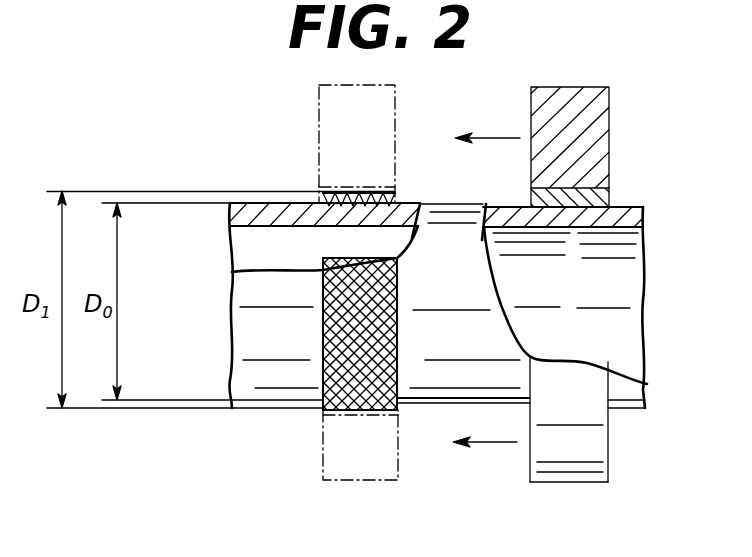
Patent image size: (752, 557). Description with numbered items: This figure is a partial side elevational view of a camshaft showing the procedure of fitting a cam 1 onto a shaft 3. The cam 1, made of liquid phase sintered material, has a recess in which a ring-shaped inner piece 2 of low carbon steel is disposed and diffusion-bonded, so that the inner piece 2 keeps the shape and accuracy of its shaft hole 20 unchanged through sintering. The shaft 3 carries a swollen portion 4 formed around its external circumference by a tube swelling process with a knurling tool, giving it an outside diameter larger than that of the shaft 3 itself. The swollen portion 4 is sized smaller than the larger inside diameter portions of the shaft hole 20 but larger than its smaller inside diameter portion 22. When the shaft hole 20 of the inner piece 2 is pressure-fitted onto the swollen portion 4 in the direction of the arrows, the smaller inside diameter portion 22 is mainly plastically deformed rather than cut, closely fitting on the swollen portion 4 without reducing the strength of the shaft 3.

The cam 1 is at (320, 88).
The inner piece 2 is at (326, 186).
The shaft 3 is at (247, 212).
The swollen portion 4 is at (384, 415).
The shaft hole 20 is at (581, 210).
The smaller inside diameter portion 22 is at (172, 6).